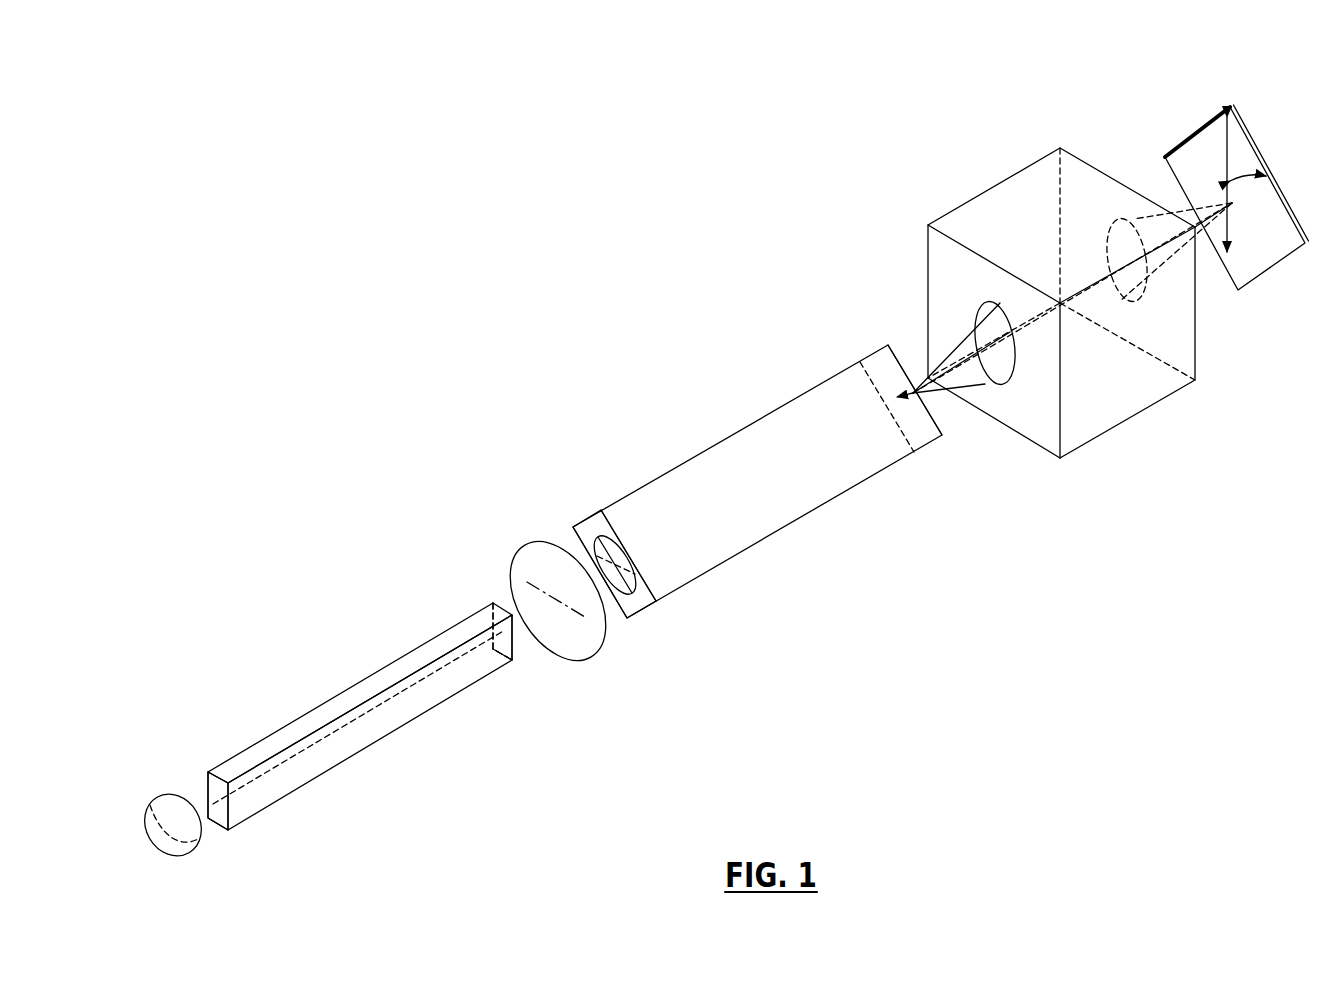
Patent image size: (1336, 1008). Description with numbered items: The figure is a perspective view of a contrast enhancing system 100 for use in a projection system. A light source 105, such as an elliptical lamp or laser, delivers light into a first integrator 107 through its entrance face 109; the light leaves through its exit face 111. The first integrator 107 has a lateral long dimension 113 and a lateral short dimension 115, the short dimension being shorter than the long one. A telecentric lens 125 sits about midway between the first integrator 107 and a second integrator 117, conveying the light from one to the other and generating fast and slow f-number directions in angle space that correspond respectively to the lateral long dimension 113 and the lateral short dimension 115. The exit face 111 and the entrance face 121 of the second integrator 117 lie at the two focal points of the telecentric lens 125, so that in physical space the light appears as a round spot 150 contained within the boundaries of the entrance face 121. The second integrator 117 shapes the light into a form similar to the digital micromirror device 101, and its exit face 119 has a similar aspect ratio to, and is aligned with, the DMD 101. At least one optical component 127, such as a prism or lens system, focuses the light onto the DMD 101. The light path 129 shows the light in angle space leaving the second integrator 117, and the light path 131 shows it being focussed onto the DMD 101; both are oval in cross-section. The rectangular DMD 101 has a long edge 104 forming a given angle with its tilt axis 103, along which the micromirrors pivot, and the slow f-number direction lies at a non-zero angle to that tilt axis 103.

The contrast enhancing system 100 is at (296, 435).
The digital micromirror device 101 is at (1285, 247).
The tilt axis 103 is at (1223, 145).
The long edge 104 is at (1250, 128).
The light source 105 is at (167, 795).
The first integrator 107 is at (408, 653).
The entrance face 109 is at (212, 790).
The exit face 111 is at (506, 598).
The lateral long dimension 113 is at (498, 648).
The lateral short dimension 115 is at (514, 627).
The second integrator 117 is at (722, 441).
The exit face 119 is at (907, 356).
The entrance face 121 is at (596, 530).
The telecentric lens 125 is at (525, 540).
The optical component 127 is at (977, 196).
The light path 129 is at (955, 338).
The light path 131 is at (1182, 218).
The round spot 150 is at (643, 616).